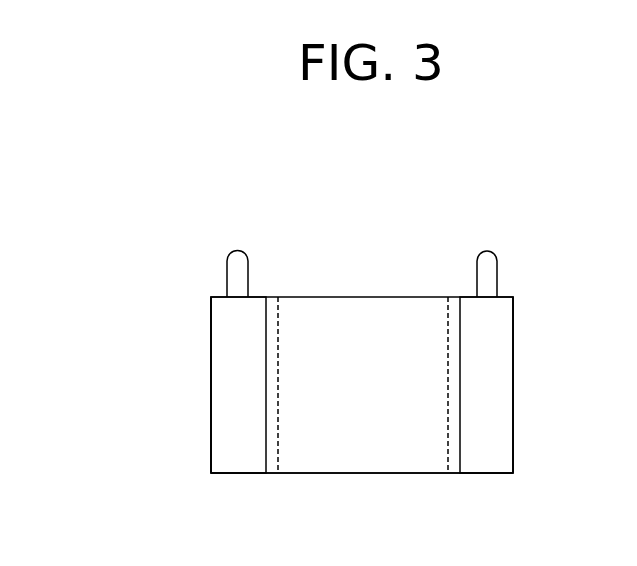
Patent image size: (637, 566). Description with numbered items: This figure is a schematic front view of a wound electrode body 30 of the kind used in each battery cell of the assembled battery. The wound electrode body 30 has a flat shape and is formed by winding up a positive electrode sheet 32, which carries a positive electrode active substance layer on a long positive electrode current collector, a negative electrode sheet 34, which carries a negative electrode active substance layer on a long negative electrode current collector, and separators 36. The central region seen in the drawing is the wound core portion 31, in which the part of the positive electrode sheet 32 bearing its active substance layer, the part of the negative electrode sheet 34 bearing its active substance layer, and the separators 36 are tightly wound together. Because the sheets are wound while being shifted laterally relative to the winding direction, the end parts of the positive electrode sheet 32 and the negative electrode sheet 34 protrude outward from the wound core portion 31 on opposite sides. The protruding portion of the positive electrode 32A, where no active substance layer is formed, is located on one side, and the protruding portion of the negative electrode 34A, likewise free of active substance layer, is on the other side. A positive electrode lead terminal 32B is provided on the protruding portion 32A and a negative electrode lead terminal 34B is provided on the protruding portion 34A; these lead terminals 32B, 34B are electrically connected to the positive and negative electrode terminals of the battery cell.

The wound electrode body 30 is at (428, 290).
The wound core portion 31 is at (360, 460).
The positive electrode sheet 32 is at (513, 350).
The protruding portion of the positive electrode 32A is at (495, 435).
The positive electrode lead terminal 32B is at (497, 268).
The negative electrode sheet 34 is at (211, 352).
The protruding portion of the negative electrode 34A is at (219, 421).
The negative electrode lead terminal 34B is at (248, 266).
The separators 36 is at (307, 296).